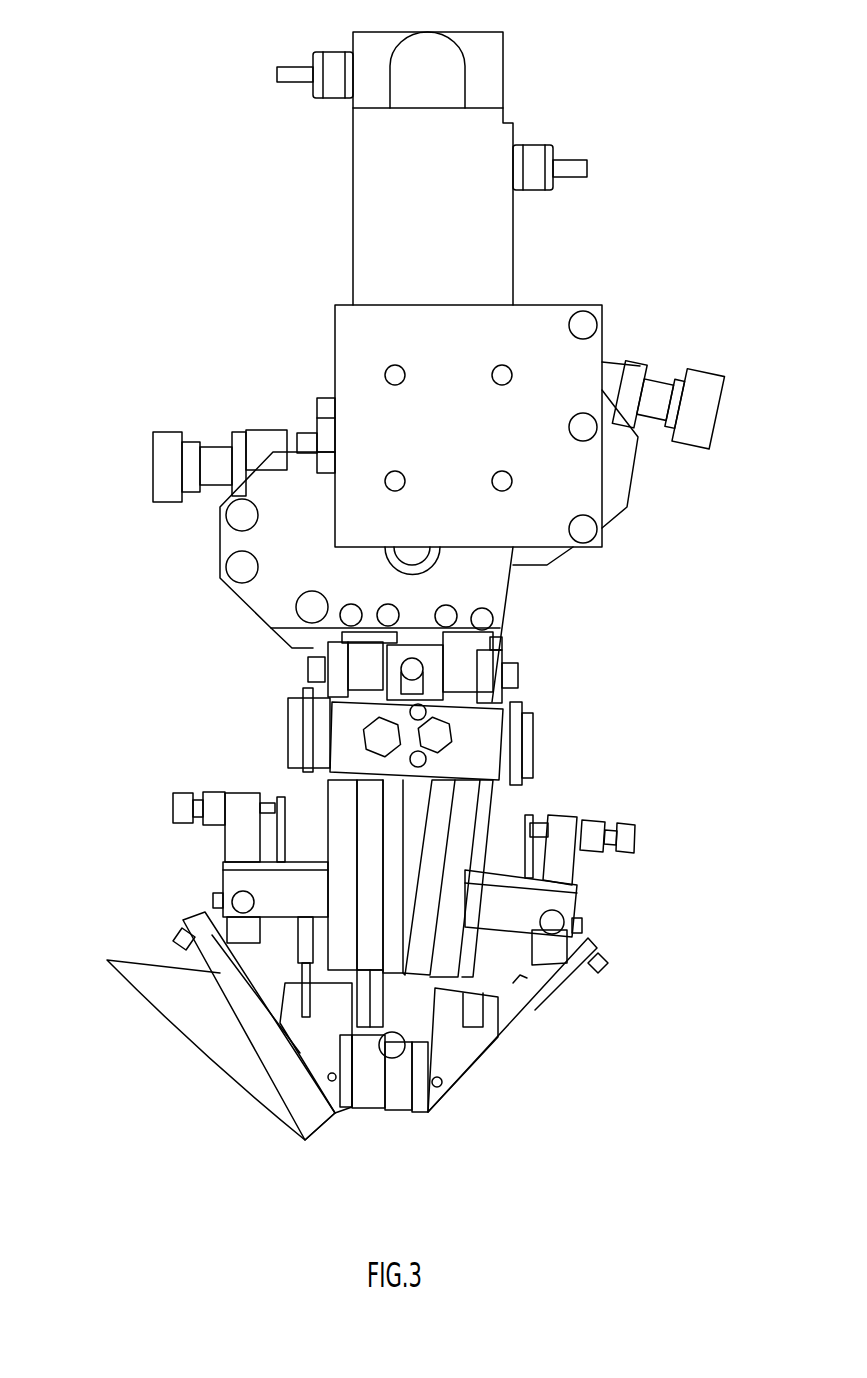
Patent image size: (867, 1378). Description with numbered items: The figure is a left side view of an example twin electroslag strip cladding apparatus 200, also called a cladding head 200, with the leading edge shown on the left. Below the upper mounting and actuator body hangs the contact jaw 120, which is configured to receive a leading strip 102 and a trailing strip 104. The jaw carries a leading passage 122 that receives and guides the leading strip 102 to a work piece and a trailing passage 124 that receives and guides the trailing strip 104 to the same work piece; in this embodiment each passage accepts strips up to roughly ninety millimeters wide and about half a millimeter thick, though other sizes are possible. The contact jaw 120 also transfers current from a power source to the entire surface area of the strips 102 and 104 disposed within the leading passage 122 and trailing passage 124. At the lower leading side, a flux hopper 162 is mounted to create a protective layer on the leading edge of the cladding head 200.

The twin ESSC apparatus 200 is at (147, 549).
The contact jaw 120 is at (366, 886).
The leading strip 102 is at (368, 807).
The trailing strip 104 is at (438, 815).
The leading passage 122 is at (370, 880).
The trailing passage 124 is at (432, 878).
The flux hopper 162 is at (258, 1073).